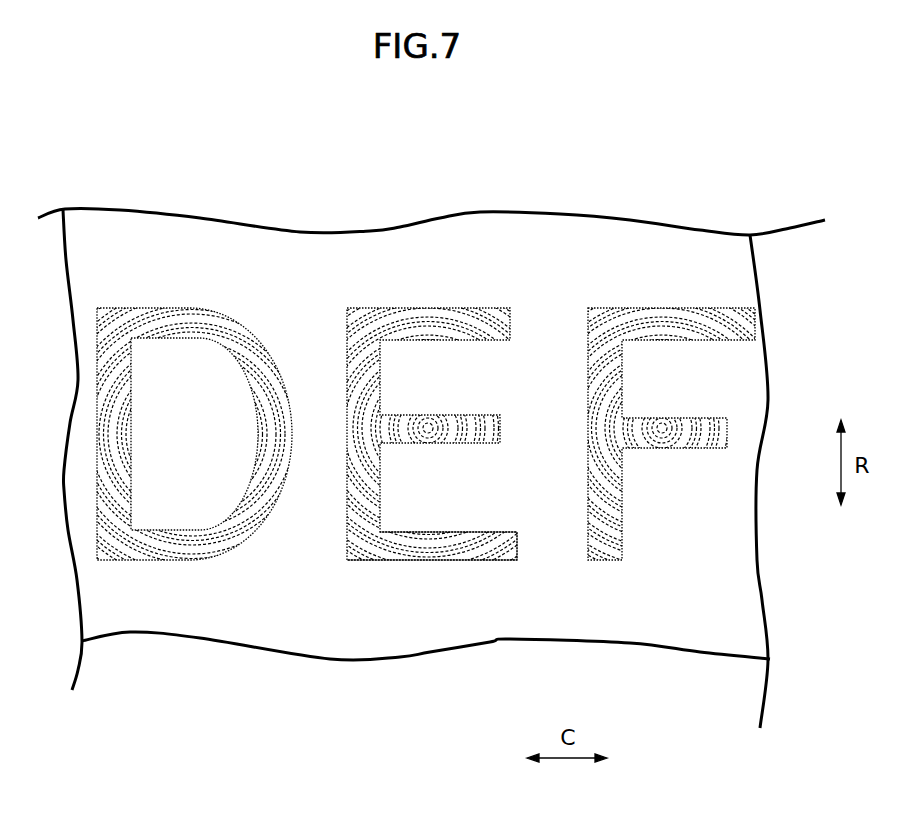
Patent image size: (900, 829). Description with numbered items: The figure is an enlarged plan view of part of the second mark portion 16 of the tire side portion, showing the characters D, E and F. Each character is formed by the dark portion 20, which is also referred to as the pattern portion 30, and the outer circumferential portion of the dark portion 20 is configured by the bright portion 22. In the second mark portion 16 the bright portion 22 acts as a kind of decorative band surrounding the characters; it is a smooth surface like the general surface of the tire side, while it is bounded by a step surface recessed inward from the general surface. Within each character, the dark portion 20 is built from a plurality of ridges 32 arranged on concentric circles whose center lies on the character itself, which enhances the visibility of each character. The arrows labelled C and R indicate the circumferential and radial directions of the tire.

The second mark portion 16 is at (605, 198).
The dark portion 20 is at (472, 306).
The pattern portion 30 is at (360, 336).
The bright portion 22 is at (303, 612).
The ridges 32 is at (427, 533).